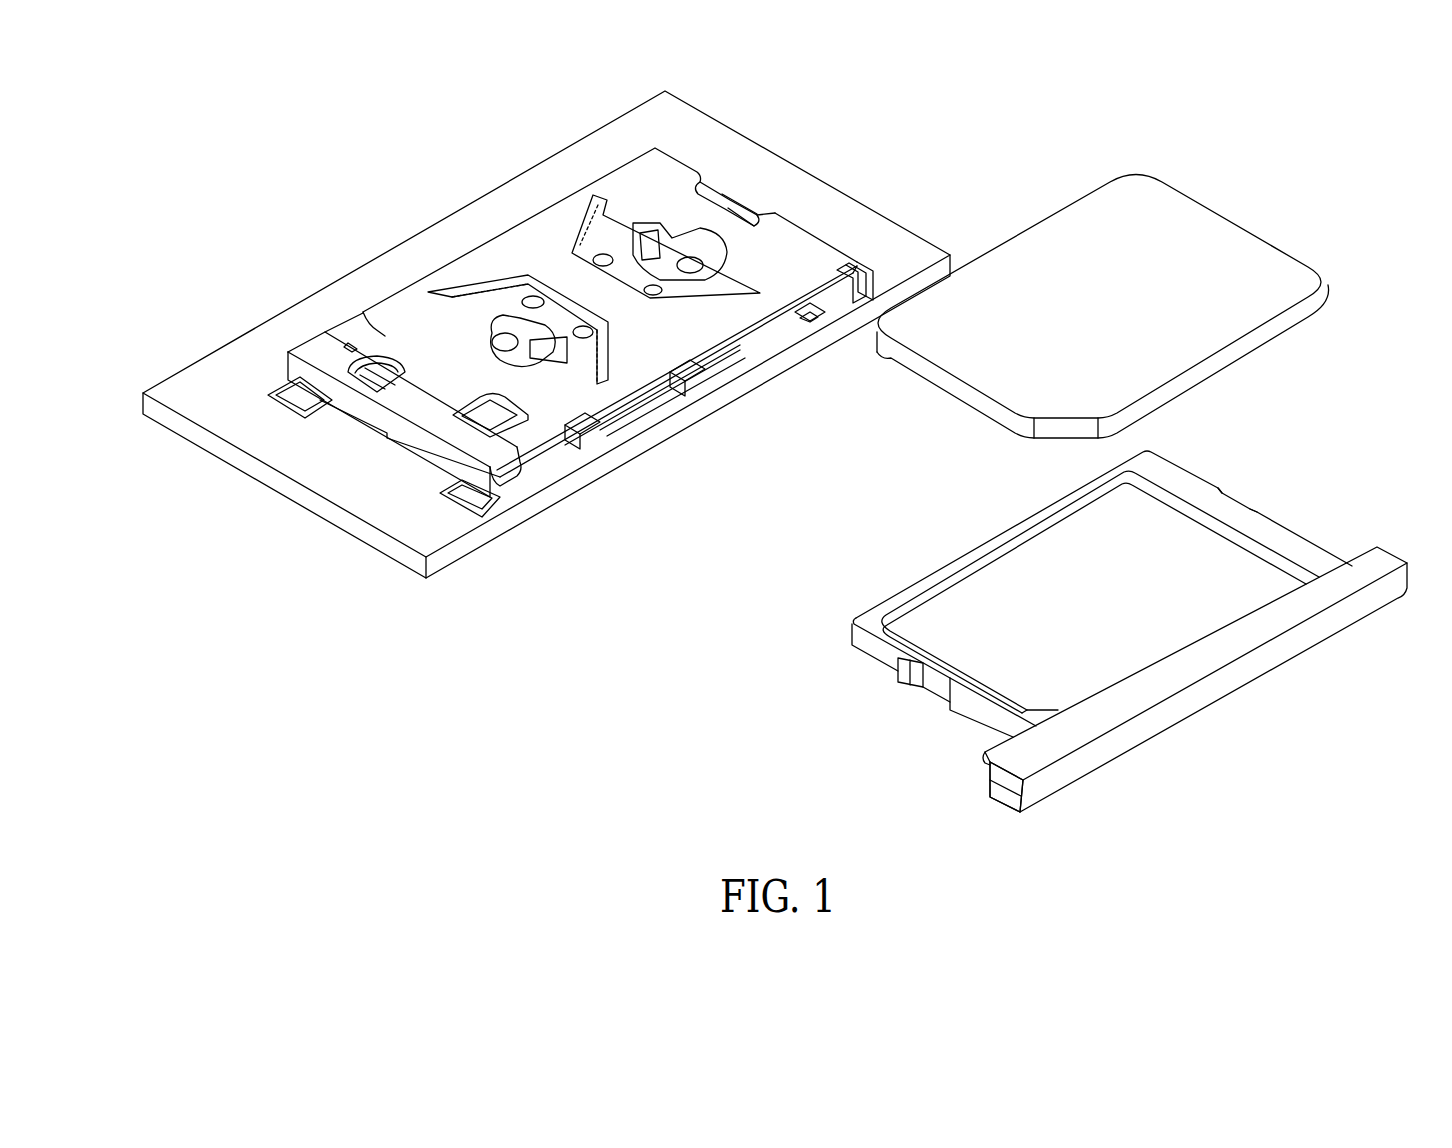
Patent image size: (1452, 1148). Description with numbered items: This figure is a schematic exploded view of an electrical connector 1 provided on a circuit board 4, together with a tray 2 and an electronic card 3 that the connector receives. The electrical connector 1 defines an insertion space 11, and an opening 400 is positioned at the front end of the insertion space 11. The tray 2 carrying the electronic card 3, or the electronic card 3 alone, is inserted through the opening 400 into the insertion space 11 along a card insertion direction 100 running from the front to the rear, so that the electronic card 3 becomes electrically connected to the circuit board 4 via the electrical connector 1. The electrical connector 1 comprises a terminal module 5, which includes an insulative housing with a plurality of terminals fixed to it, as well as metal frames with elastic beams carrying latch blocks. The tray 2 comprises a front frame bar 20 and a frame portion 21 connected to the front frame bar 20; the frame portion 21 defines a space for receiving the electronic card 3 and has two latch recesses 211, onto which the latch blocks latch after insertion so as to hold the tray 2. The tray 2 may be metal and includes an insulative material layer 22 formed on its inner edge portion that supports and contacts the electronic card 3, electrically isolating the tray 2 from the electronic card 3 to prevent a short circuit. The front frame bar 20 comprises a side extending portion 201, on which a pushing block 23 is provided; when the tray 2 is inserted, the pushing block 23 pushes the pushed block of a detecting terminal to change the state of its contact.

The electrical connector 1 is at (282, 325).
The tray 2 is at (836, 660).
The electronic card 3 is at (1213, 226).
The circuit board 4 is at (744, 144).
The terminal module 5 is at (727, 380).
The insertion space 11 is at (552, 470).
The front frame bar 20 is at (1318, 597).
The frame portion 21 is at (1185, 458).
The insulative material layer 22 is at (1268, 535).
The pushing block 23 is at (977, 757).
The card insertion direction 100 is at (803, 445).
The side extending portion 201 is at (1045, 755).
The latch recesses 211 is at (1245, 490).
The opening 400 is at (497, 485).